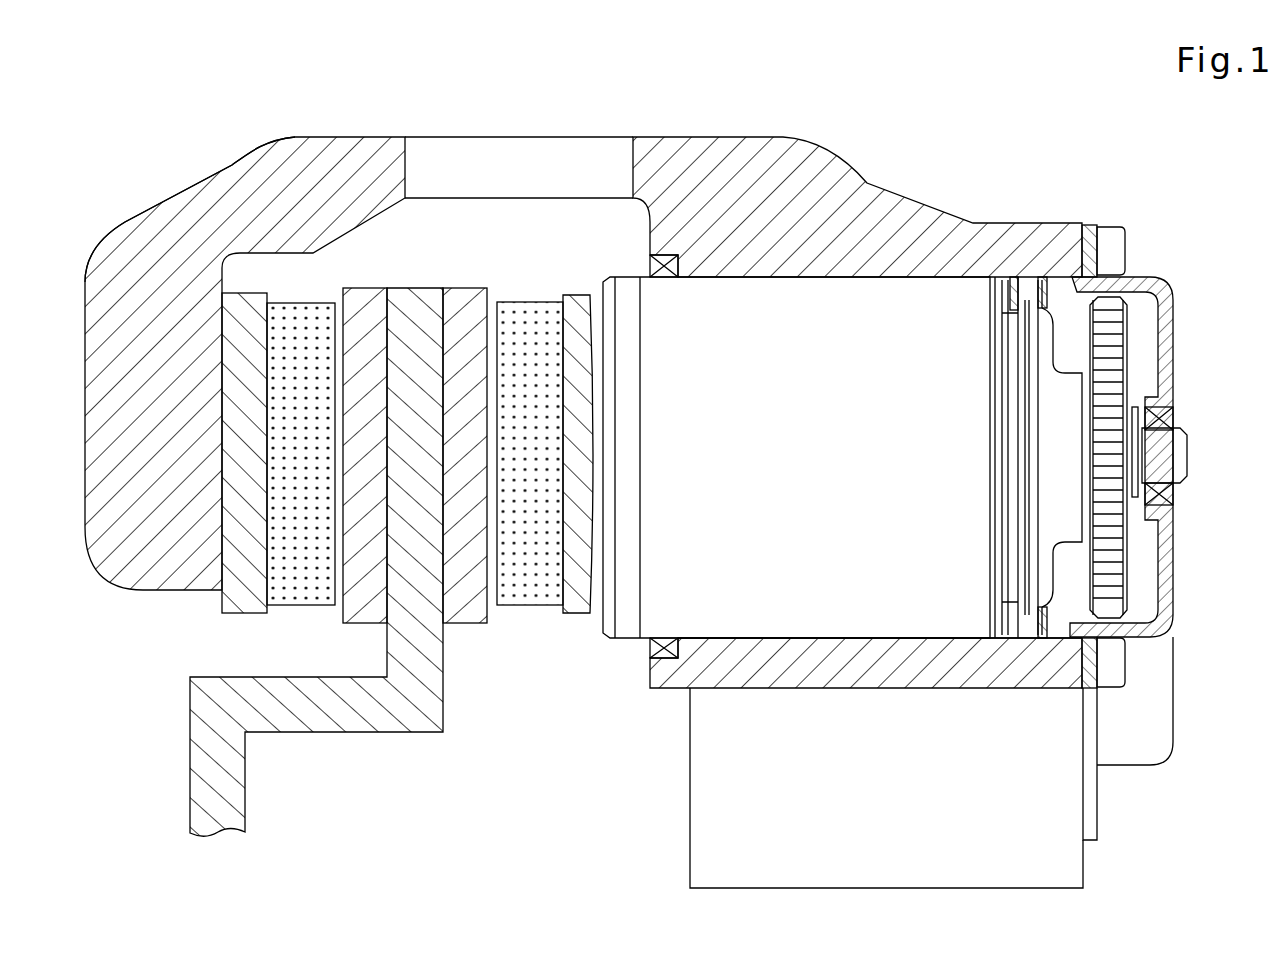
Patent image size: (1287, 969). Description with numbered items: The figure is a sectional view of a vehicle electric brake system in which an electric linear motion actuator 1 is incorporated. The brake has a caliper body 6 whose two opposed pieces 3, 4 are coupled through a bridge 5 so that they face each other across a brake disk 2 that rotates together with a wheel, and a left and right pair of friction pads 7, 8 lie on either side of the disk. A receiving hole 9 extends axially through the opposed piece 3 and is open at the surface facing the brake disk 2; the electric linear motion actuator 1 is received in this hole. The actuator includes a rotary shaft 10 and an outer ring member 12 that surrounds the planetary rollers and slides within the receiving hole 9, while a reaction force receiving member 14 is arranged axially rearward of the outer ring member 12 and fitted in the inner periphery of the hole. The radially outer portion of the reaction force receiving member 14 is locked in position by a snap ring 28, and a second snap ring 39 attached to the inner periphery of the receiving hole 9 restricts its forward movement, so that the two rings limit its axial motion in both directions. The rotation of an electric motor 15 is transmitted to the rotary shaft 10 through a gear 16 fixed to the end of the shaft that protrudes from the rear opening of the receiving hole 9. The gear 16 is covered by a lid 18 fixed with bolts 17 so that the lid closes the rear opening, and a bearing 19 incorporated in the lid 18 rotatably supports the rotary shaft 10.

The electric linear motion actuator 1 is at (737, 268).
The brake disk 2 is at (415, 302).
The opposed piece 3 is at (663, 673).
The opposed piece 4 is at (100, 412).
The bridge 5 is at (356, 147).
The caliper body 6 is at (165, 198).
The friction pad 7 is at (528, 598).
The friction pad 8 is at (298, 597).
The receiving hole 9 is at (803, 637).
The rotary shaft 10 is at (1168, 452).
The outer ring member 12 is at (805, 300).
The reaction force receiving member 14 is at (1028, 283).
The electric motor 15 is at (1072, 815).
The gear 16 is at (1130, 545).
The bolts 17 is at (1112, 250).
The lid 18 is at (1175, 600).
The bearing 19 is at (1170, 495).
The snap ring 28 is at (1042, 320).
The snap ring 39 is at (1004, 283).